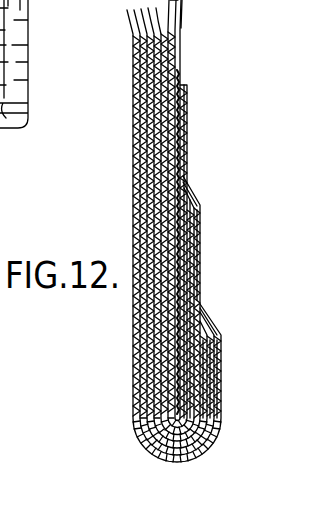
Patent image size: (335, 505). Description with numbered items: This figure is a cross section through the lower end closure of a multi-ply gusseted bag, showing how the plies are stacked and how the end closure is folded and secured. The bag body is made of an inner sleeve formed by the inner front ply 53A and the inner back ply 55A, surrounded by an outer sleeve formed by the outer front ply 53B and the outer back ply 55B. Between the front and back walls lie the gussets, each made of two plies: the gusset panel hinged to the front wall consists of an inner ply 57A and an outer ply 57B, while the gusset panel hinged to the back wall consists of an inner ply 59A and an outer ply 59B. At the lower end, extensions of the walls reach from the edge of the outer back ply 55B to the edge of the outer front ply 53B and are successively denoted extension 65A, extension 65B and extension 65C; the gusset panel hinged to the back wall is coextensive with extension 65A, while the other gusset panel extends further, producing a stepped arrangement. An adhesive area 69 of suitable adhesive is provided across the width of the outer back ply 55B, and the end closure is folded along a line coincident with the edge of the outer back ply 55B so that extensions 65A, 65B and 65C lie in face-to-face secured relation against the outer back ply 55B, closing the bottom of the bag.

The inner front ply 53A is at (139, 87).
The outer front ply 53B is at (131, 61).
The inner back ply 55A is at (170, 52).
The outer back ply 55B is at (180, 27).
The inner ply of gusset panel 57A is at (145, 113).
The outer ply of gusset panel 57B is at (150, 139).
The inner ply of gusset panel 59A is at (163, 62).
The outer ply of gusset panel 59B is at (166, 78).
The extension 65A is at (200, 378).
The extension 65B is at (200, 263).
The extension 65C is at (183, 114).
The adhesive area 69 is at (179, 150).